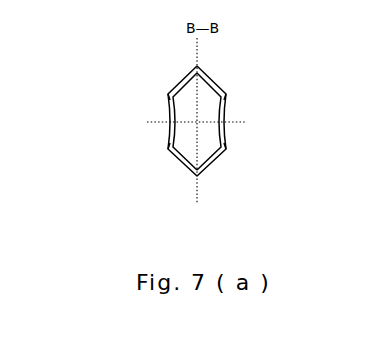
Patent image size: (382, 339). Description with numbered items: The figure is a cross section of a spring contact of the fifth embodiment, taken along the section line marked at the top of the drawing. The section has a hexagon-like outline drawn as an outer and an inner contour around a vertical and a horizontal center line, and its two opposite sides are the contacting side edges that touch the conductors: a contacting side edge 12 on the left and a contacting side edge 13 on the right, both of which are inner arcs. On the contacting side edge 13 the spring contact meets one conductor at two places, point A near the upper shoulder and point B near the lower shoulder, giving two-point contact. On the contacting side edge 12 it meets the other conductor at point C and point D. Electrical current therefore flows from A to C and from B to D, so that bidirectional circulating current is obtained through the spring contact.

The contacting side edge 12 is at (167, 108).
The contacting side edge 13 is at (226, 108).
The contact point A is at (238, 82).
The contact point B is at (237, 152).
The contact point C is at (157, 82).
The contact point D is at (156, 152).